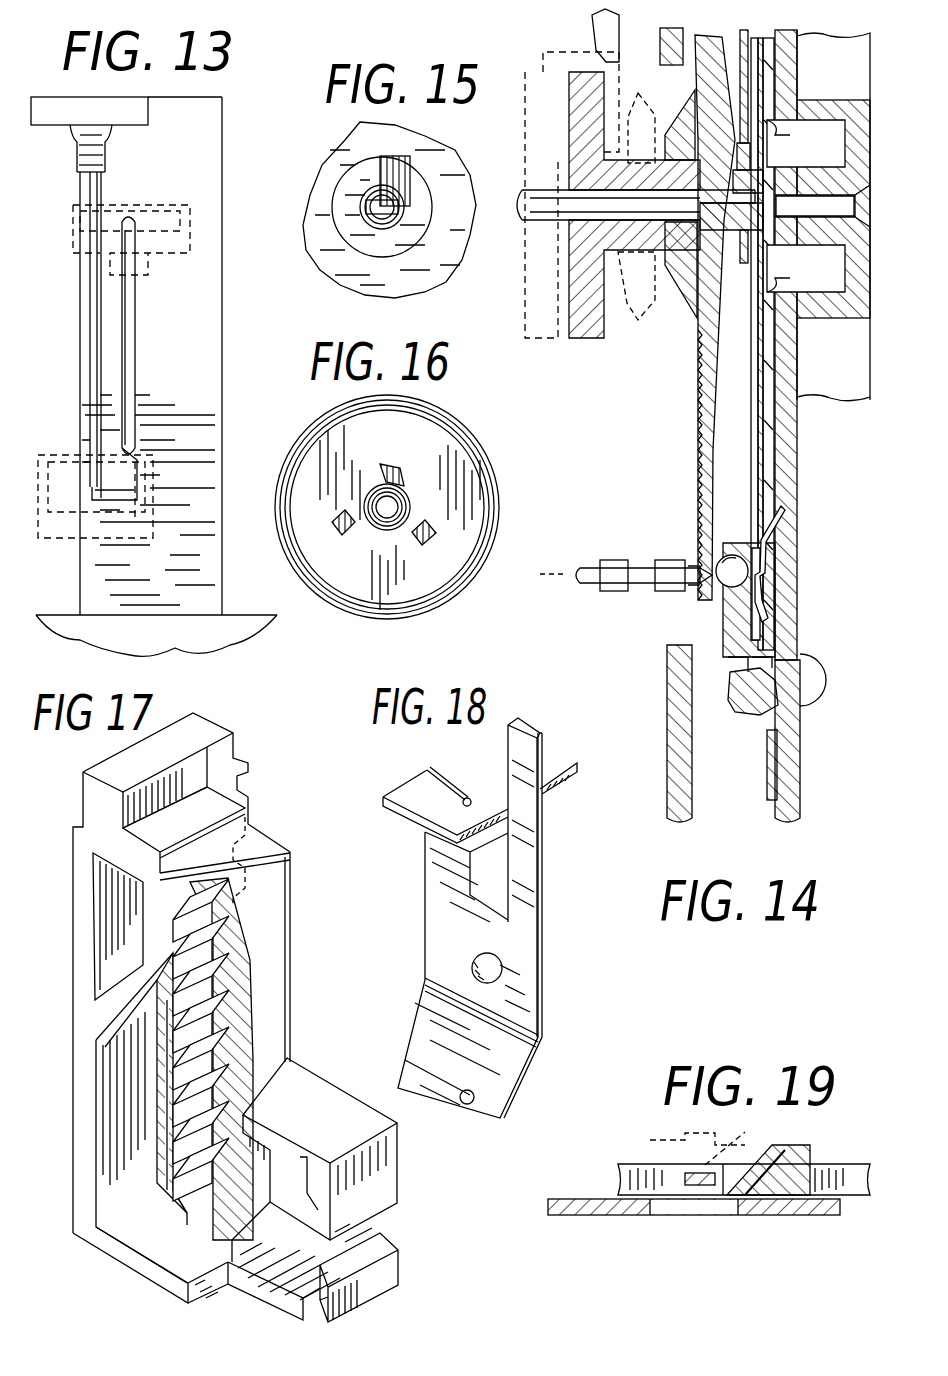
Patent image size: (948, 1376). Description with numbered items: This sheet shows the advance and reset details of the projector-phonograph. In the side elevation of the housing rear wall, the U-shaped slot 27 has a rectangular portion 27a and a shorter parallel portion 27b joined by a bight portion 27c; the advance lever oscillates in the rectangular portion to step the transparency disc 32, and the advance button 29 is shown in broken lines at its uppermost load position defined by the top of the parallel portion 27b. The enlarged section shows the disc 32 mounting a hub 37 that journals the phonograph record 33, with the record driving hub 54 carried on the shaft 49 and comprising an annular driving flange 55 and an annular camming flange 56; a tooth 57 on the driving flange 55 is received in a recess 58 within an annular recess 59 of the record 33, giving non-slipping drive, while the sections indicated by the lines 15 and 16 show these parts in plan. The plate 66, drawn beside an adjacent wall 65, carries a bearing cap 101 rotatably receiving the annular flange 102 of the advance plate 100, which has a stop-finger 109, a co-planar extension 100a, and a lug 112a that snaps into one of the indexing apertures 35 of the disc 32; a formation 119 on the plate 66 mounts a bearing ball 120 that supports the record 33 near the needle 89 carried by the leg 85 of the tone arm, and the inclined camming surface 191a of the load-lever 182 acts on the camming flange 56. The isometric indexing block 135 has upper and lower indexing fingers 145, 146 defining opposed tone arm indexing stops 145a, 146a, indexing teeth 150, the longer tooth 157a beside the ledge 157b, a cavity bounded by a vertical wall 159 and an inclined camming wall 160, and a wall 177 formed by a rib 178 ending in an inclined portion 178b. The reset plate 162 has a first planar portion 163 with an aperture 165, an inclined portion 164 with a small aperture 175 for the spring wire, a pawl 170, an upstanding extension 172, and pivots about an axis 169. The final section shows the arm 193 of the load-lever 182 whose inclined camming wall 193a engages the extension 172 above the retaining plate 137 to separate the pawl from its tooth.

In FIG. 13, the advance button 29 is at (60, 97).
In FIG. 13, the U-shaped slot 27 is at (149, 414).
In FIG. 13, the rectangular slot portion 27a is at (90, 321).
In FIG. 13, the parallel slot portion 27b is at (140, 331).
In FIG. 13, the bight portion 27c is at (125, 492).
In FIG. 15, the phonograph record 33 is at (420, 283).
In FIG. 14, the phonograph record 33 is at (698, 455).
In FIG. 15, the hub 37 is at (374, 200).
In FIG. 14, the hub 37 is at (757, 195).
In FIG. 15, the recess 58 is at (376, 165).
In FIG. 14, the recess 58 is at (750, 158).
In FIG. 15, the annular recess 59 is at (352, 236).
In FIG. 16, the driving flange 55 is at (480, 458).
In FIG. 14, the driving flange 55 is at (682, 303).
In FIG. 16, the tooth 57 is at (388, 466).
In FIG. 14, the tooth 57 is at (745, 258).
In FIG. 14, the inclined camming surface 191a is at (596, 40).
In FIG. 14, the section line 16— 16 is at (692, 76).
In FIG. 14, the section line 15— 15 is at (722, 135).
In FIG. 14, the bearing cap 101 is at (846, 78).
In FIG. 14, the shaft 49 is at (522, 190).
In FIG. 14, the annular flange 102 is at (813, 278).
In FIG. 14, the camming flange 56 is at (588, 336).
In FIG. 14, the record driving hub 54 is at (614, 350).
In FIG. 14, the advance plate 100 is at (735, 388).
In FIG. 14, the transparency disc 32 is at (754, 496).
In FIG. 14, the leg of tone arm 85 is at (640, 566).
In FIG. 14, the needle 89 is at (690, 568).
In FIG. 14, the lug 112a is at (778, 584).
In FIG. 14, the indexing apertures 35 is at (775, 609).
In FIG. 14, the bearing ball 120 is at (720, 580).
In FIG. 14, the formation 119 is at (723, 613).
In FIG. 14, the stop-finger 109 is at (748, 708).
In FIG. 14, the left wall 65 is at (670, 766).
In FIG. 14, the plate 66 is at (802, 773).
In FIG. 14, the co-planar extension 100a is at (773, 782).
In FIG. 17, the indexing teeth 150 is at (250, 760).
In FIG. 17, the indexing block 135 is at (290, 1002).
In FIG. 17, the tooth 157a is at (188, 932).
In FIG. 17, the ledge 157b is at (165, 904).
In FIG. 17, the inclined camming wall 160 is at (115, 1026).
In FIG. 17, the wall 177 is at (183, 1068).
In FIG. 17, the vertical wall 159 is at (110, 1125).
In FIG. 17, the rib 178 is at (160, 1163).
In FIG. 17, the inclined portion 178b is at (168, 1198).
In FIG. 17, the upper indexing finger 145 is at (332, 1102).
In FIG. 17, the upper indexing stop 145a is at (356, 1182).
In FIG. 17, the lower indexing finger 146 is at (280, 1292).
In FIG. 17, the lower indexing stop 146a is at (368, 1228).
In FIG. 18, the reset plate 162 is at (545, 980).
In FIG. 18, the upstanding extension 172 is at (522, 722).
In FIG. 19, the upstanding extension 172 is at (692, 1175).
In FIG. 18, the pawl 170 is at (546, 760).
In FIG. 18, the first planar portion 163 is at (425, 900).
In FIG. 18, the aperture 165 is at (490, 965).
In FIG. 18, the axis 169 is at (560, 1015).
In FIG. 18, the second planar portion 164 is at (505, 1075).
In FIG. 18, the small aperture 175 is at (474, 1100).
In FIG. 19, the retaining plate 137 is at (560, 1216).
In FIG. 19, the load-lever 182 is at (860, 1164).
In FIG. 19, the arm 193 is at (812, 1150).
In FIG. 19, the inclined camming wall 193a is at (738, 1180).